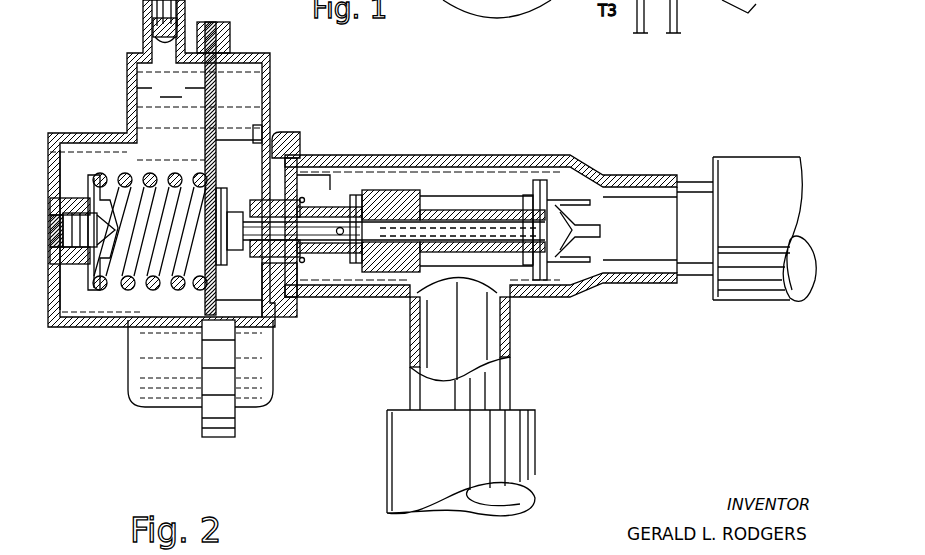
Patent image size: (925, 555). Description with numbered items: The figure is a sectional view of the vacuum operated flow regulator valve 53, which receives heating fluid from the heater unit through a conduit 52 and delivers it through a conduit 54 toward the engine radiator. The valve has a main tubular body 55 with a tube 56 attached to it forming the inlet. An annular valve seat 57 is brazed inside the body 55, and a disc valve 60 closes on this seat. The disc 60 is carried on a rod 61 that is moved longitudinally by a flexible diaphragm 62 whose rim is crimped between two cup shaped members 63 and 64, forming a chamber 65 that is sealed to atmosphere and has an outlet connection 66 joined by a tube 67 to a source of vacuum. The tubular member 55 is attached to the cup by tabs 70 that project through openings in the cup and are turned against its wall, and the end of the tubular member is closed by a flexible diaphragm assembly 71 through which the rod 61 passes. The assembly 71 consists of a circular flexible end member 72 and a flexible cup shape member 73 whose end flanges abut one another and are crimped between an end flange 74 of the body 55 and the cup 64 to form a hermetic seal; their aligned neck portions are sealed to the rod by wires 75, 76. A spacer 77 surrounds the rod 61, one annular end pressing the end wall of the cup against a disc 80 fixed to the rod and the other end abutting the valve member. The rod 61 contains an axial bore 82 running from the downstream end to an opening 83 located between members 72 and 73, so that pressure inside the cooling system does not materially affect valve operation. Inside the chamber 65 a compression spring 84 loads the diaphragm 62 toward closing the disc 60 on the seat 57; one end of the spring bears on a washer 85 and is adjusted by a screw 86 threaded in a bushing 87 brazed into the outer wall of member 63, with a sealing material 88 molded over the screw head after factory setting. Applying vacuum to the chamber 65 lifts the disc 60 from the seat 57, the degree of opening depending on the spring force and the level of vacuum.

The conduit 52 is at (387, 428).
The flow regulator valve 53 is at (400, 153).
The conduit 54 is at (742, 158).
The main tubular body 55 is at (466, 156).
The tube 56 is at (416, 382).
The annular valve seat 57 is at (576, 168).
The disc valve 60 is at (533, 190).
The rod 61 is at (262, 262).
The flexible diaphragm 62 is at (217, 112).
The cup shaped member 63 is at (137, 88).
The cup shaped member 64 is at (270, 88).
The chamber 65 is at (171, 88).
The outlet connection 66 is at (165, 42).
The tube 67 is at (142, 3).
The tabs 70 is at (255, 132).
The flexible diaphragm assembly 71 is at (306, 184).
The circular flexible end member 72 is at (308, 296).
The flexible cup shape member 73 is at (360, 296).
The end flange 74 is at (280, 145).
The wire 75 is at (300, 208).
The wire 76 is at (388, 192).
The spacer 77 is at (472, 246).
The disc 80 is at (355, 194).
The axial bore 82 is at (440, 228).
The opening 83 is at (346, 238).
The compression spring 84 is at (128, 287).
The washer 85 is at (65, 292).
The screw 86 is at (60, 271).
The bushing 87 is at (62, 182).
The sealing material 88 is at (58, 231).